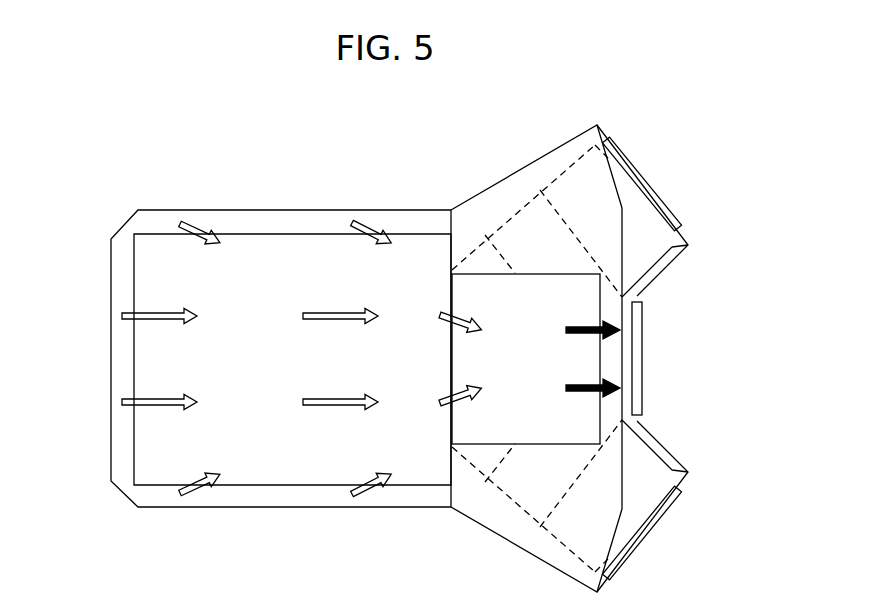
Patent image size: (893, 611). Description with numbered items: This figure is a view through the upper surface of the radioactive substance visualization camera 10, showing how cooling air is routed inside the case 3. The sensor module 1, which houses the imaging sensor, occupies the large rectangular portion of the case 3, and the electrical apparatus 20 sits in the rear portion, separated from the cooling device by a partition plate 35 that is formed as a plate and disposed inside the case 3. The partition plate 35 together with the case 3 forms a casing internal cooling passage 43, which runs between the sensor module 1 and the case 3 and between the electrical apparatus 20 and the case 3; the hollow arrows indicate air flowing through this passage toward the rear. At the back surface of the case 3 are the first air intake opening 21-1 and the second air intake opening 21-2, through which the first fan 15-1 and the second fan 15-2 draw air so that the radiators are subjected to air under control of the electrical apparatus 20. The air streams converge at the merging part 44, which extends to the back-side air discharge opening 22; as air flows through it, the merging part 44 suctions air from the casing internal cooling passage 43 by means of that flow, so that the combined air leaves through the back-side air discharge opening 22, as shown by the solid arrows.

The radioactive substance visualization camera 10 is at (403, 158).
The case 3 is at (111, 284).
The sensor module 1 is at (242, 234).
The casing internal cooling passage 43 is at (302, 222).
The electrical apparatus 20 is at (475, 272).
The partition plate 35 is at (623, 250).
The first fan 15-1 is at (640, 275).
The second fan 15-2 is at (653, 450).
The first air intake opening 21-1 is at (637, 163).
The second air intake opening 21-2 is at (642, 545).
The back-side air discharge opening 22 is at (642, 393).
The merging part 44 is at (628, 354).